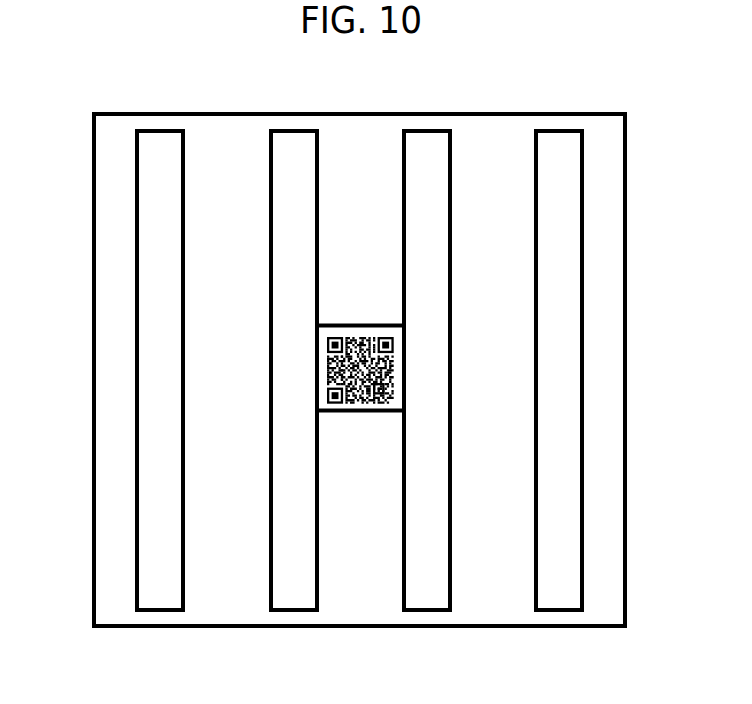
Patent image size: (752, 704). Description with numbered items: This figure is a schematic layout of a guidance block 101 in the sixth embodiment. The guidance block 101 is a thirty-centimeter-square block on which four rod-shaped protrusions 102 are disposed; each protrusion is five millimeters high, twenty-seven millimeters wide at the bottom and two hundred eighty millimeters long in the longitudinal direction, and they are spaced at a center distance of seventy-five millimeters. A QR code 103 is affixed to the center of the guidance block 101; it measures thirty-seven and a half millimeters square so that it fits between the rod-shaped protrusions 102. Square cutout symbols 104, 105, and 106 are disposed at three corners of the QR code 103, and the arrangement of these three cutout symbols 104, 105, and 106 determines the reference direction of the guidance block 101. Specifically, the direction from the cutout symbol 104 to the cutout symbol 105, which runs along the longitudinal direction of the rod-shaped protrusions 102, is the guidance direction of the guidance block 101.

The guidance block 101 is at (435, 112).
The rod-shaped protrusions 102 is at (555, 128).
The QR code 103 is at (360, 413).
The cutout symbol 104 is at (327, 396).
The cutout symbol 105 is at (327, 343).
The cutout symbol 106 is at (393, 343).